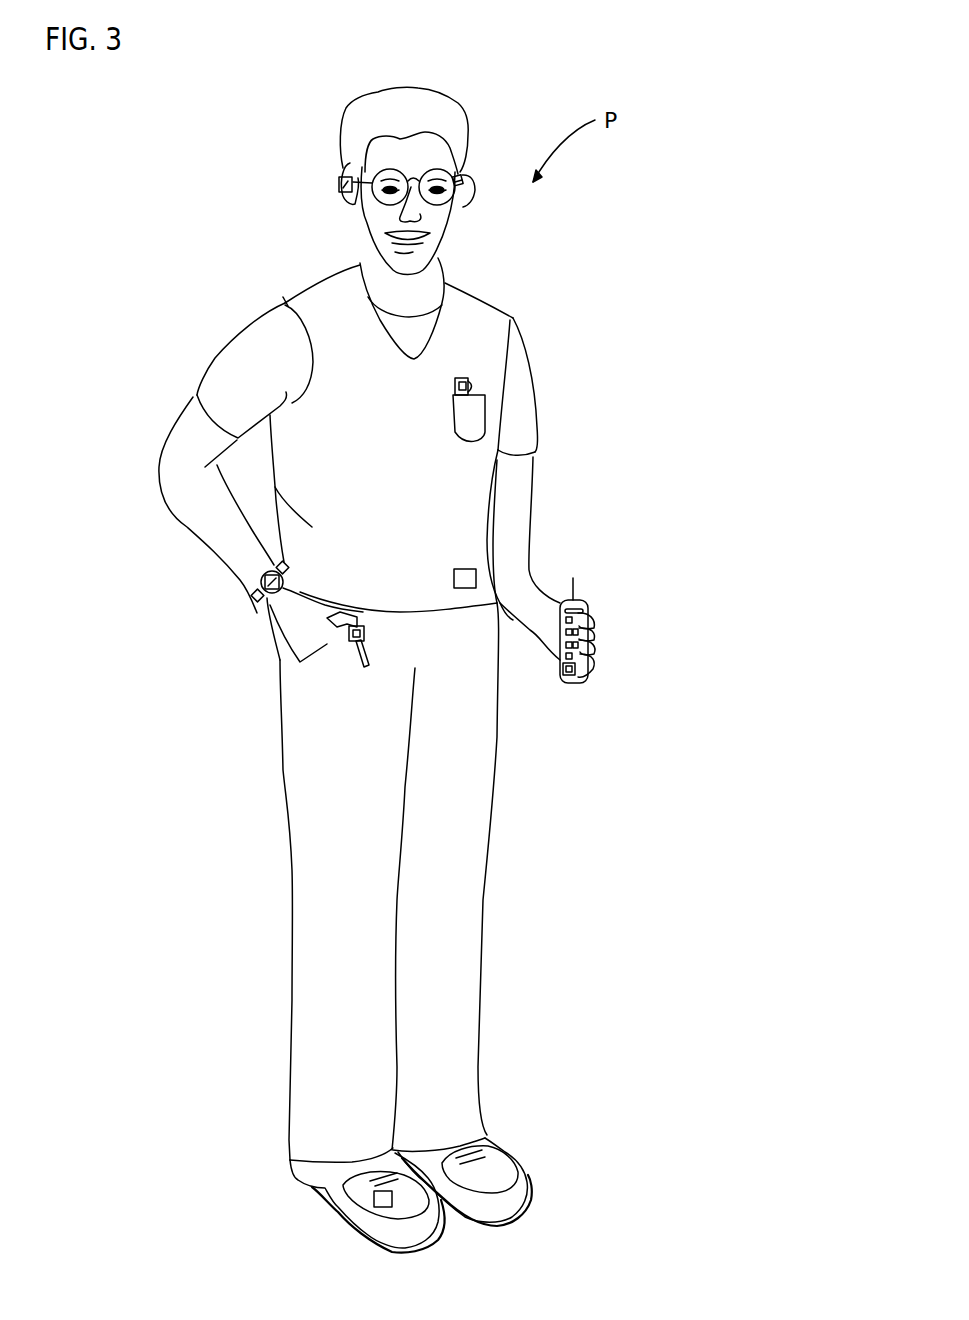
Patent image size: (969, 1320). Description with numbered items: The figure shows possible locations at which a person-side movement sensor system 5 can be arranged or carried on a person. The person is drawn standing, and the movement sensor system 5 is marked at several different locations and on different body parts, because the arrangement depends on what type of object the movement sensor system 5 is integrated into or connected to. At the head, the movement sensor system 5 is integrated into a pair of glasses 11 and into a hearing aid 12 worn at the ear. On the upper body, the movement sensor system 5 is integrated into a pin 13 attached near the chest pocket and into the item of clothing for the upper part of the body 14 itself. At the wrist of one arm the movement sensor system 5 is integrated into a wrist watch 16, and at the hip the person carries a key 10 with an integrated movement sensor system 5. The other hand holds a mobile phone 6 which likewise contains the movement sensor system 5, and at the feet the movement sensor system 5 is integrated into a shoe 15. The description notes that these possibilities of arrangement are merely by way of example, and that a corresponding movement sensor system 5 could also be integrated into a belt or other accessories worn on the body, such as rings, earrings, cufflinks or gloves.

The person-side movement sensor system 5 is at (342, 191).
The mobile phone 6 is at (578, 598).
The key 10 is at (367, 658).
The pair of glasses 11 is at (388, 207).
The hearing aid 12 is at (341, 177).
The pin 13 is at (462, 377).
The item of clothing for the upper part of the body 14 is at (453, 517).
The shoe 15 is at (345, 1175).
The wrist watch 16 is at (262, 574).